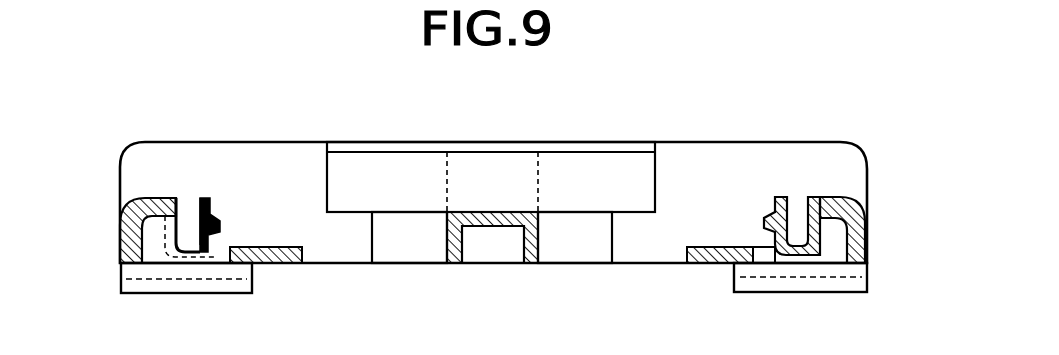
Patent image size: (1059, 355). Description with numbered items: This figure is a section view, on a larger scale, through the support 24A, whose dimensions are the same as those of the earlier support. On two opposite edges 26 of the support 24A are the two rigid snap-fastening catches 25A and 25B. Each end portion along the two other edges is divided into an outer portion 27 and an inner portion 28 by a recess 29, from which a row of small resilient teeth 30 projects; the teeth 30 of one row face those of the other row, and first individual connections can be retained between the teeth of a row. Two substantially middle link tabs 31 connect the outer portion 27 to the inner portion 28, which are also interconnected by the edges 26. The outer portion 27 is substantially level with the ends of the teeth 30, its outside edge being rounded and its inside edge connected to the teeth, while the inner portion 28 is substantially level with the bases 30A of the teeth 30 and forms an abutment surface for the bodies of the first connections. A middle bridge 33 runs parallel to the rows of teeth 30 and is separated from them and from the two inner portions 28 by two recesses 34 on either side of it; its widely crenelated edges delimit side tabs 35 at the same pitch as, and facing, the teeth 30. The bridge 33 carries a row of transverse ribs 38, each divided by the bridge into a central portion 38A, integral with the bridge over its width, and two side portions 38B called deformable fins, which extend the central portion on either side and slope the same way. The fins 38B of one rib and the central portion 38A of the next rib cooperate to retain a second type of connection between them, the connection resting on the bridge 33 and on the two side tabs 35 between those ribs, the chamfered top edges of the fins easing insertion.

The support 24A is at (106, 180).
The opposite edges 26 is at (263, 158).
The outer portion 27 is at (133, 196).
The inner portion 28 is at (297, 264).
The recess 29 is at (763, 253).
The resilient teeth 30 is at (213, 215).
The bases of the teeth 30A is at (811, 266).
The link tabs 31 is at (218, 266).
The middle bridge 33 is at (500, 230).
The recesses 34 is at (657, 256).
The side tabs 35 is at (410, 240).
The transverse ribs 38 is at (352, 218).
The central portion 38A is at (497, 168).
The deformable fins 38B is at (375, 170).
The rigid snap-fastening catch 25A is at (163, 287).
The rigid snap-fastening catch 25B is at (847, 282).